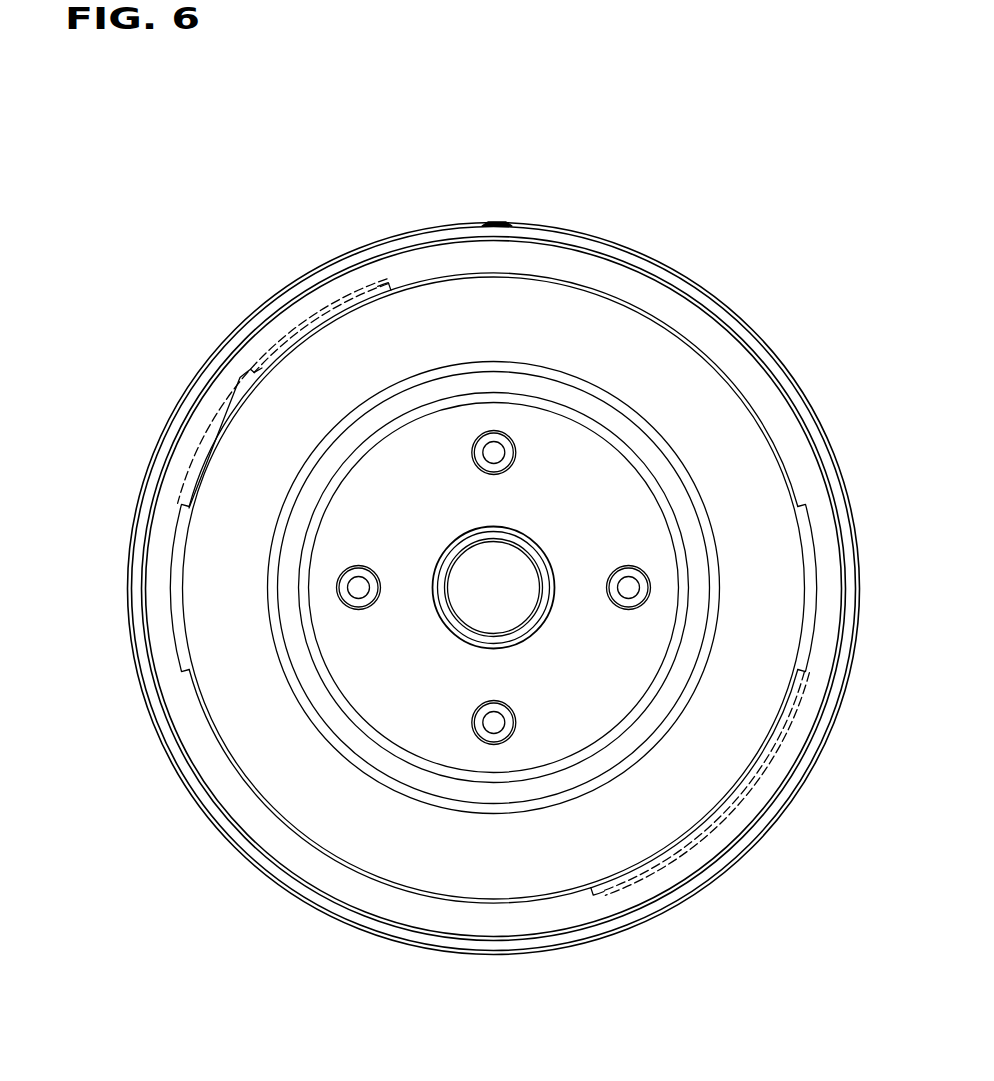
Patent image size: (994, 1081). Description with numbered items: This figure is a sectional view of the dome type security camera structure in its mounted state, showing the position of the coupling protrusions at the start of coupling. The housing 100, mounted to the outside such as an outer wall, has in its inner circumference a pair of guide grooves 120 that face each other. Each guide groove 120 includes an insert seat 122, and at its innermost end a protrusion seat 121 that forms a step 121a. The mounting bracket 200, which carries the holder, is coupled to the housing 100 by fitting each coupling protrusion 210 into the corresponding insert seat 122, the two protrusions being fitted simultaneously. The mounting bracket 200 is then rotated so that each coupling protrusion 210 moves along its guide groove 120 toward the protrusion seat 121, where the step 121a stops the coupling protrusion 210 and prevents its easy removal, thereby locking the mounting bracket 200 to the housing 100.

The housing 100 is at (467, 222).
The mounting bracket 200 is at (613, 343).
The guide groove 120 is at (228, 443).
The protrusion seat 121 is at (348, 316).
The step 121a is at (262, 366).
The insert seat 122 is at (178, 596).
The coupling protrusion 210 is at (311, 317).